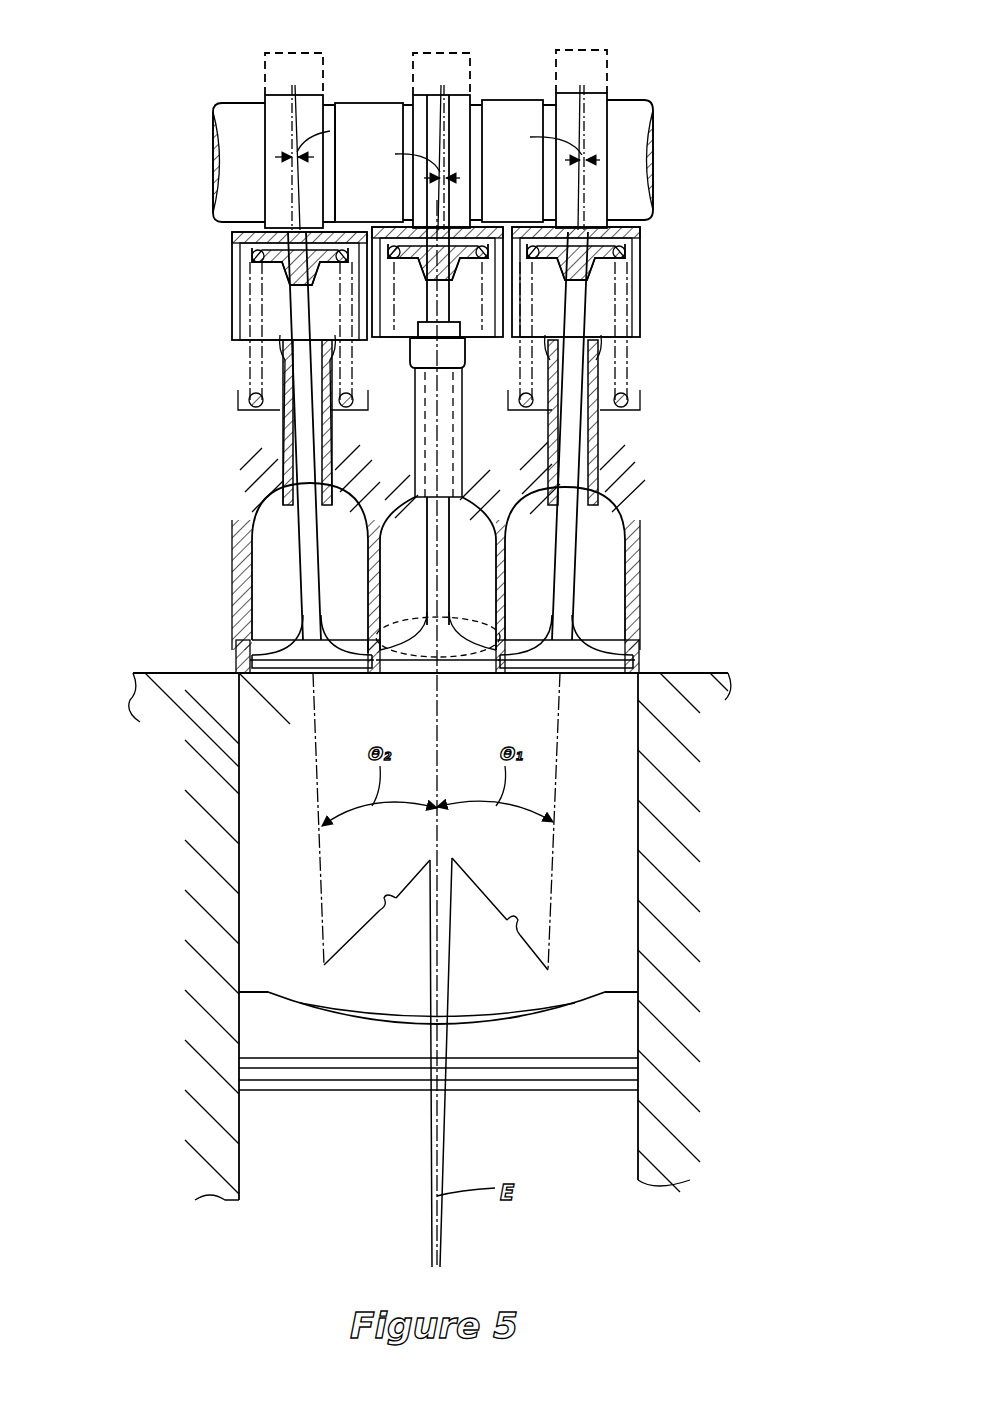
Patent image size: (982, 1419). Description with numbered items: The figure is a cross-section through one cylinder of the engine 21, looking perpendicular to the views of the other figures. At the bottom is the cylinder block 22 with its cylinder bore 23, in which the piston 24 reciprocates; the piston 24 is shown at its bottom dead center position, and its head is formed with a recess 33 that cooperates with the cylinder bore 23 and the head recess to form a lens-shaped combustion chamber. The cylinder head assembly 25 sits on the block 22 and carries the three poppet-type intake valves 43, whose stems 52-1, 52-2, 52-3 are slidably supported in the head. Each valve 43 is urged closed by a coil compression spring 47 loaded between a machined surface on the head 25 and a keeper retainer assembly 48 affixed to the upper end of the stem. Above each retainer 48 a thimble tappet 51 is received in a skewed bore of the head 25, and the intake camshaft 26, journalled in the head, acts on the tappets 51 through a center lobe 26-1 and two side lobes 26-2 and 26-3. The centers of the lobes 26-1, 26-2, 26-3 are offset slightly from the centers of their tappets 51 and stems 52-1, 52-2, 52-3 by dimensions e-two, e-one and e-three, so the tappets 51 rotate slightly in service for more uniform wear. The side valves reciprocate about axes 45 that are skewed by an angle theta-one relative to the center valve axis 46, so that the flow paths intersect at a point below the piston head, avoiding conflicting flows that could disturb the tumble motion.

The engine 21 is at (150, 138).
The cylinder block 22 is at (150, 670).
The cylinder bore 23 is at (240, 868).
The piston 24 is at (608, 988).
The cylinder head assembly 25 is at (168, 548).
The intake camshaft 26 is at (236, 98).
The center lobe 26-1 is at (442, 95).
The side lobe 26-2 is at (305, 95).
The side lobe 26-3 is at (572, 93).
The recess 33 is at (474, 1010).
The intake valve 43 is at (296, 560).
The axis of side intake valve 45 is at (320, 740).
The reciprocal axis of center intake valve 46 is at (440, 742).
The coil compression spring 47 is at (252, 366).
The keeper retainer assembly 48 is at (278, 282).
The thimble tappet 51 is at (236, 252).
The valve stem 52-1 is at (452, 583).
The valve stem 52-2 is at (288, 438).
The valve stem 52-3 is at (572, 590).